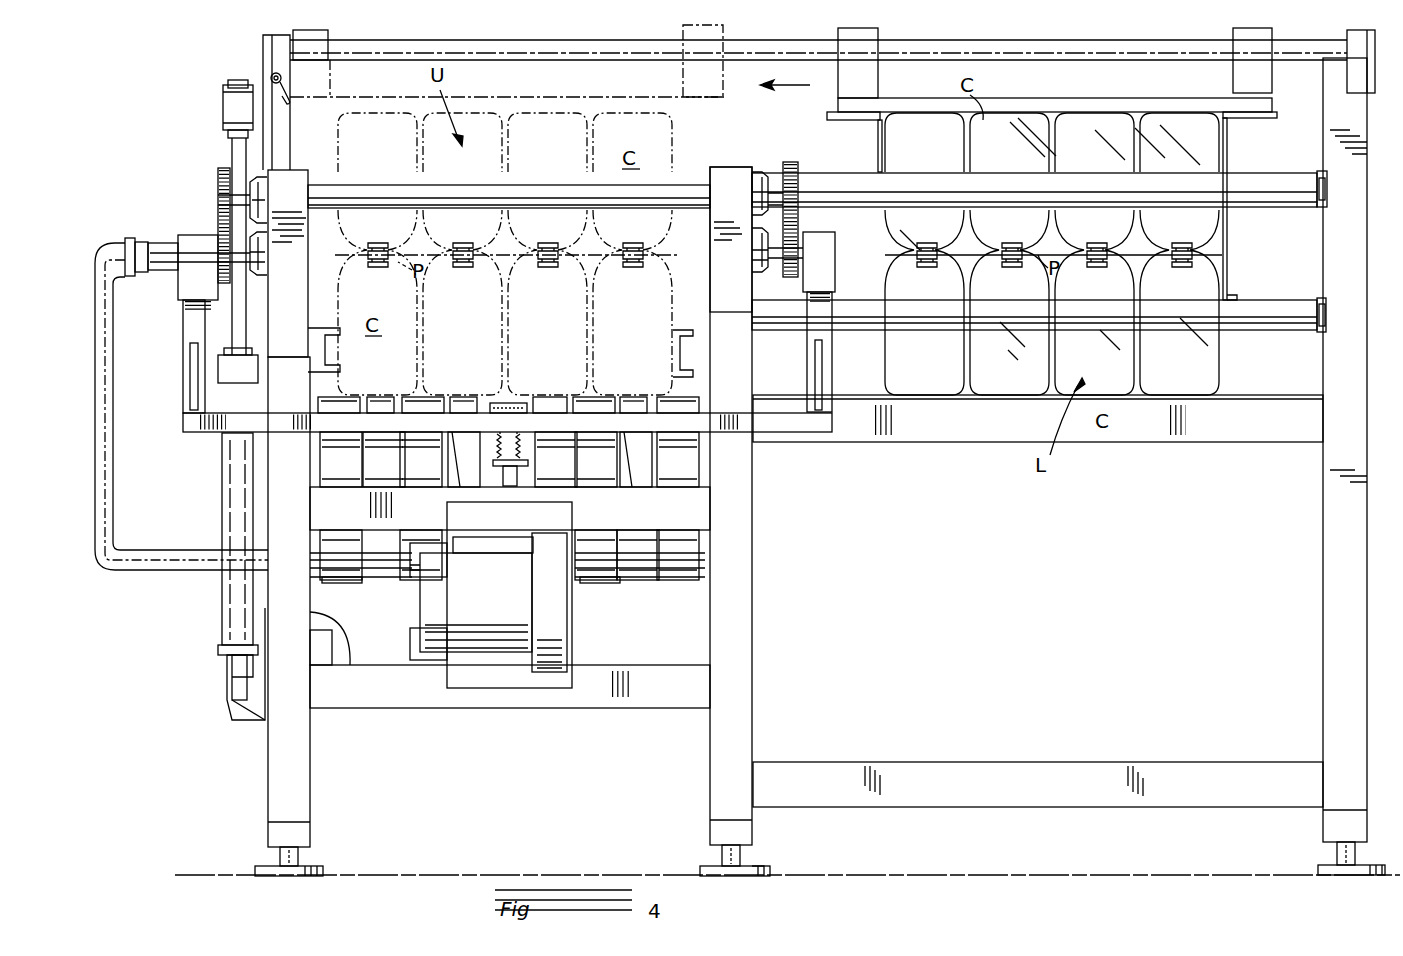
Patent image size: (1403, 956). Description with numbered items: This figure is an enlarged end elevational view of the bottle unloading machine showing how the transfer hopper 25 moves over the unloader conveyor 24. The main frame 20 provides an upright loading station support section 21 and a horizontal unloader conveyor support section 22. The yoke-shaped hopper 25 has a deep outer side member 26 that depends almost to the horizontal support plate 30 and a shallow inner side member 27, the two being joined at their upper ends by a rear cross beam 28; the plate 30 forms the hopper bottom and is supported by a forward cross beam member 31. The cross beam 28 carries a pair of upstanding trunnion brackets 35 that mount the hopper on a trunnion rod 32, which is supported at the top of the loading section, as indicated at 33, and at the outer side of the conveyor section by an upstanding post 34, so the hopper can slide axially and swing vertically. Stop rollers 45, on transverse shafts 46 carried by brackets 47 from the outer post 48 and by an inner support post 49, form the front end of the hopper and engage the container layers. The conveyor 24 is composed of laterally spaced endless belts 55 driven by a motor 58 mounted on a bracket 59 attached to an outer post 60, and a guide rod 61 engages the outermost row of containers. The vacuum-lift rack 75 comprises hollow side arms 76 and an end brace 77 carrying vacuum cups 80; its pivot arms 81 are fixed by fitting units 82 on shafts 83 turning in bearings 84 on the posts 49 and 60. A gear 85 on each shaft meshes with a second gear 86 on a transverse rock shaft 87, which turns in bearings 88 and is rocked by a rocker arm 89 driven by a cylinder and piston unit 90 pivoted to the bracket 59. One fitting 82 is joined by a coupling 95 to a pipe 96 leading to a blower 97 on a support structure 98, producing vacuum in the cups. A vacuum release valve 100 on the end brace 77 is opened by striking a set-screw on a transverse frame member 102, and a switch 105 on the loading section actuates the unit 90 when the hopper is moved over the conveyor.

The main frame 20 is at (760, 652).
The loading station support section 21 is at (1360, 172).
The unloader conveyor support section 22 is at (280, 463).
The unloader conveyor 24 is at (530, 410).
The hopper 25 is at (560, 120).
The outer side member 26 is at (1228, 160).
The inner side member 27 is at (878, 142).
The rear cross beam 28 is at (1008, 100).
The horizontal support plate 30 is at (1258, 395).
The forward cross beam member 31 is at (1196, 432).
The trunnion rod 32 is at (748, 52).
The trunnion rod support 33 is at (1362, 54).
The upstanding post 34 is at (262, 43).
The trunnion brackets 35 is at (320, 76).
The stop rollers 45 is at (1258, 193).
The transverse shafts 46 is at (1320, 172).
The brackets 47 is at (1325, 192).
The outer post 48 is at (1340, 695).
The inner support post 49 is at (724, 172).
The endless belts 55 is at (328, 583).
The motor 58 is at (340, 630).
The bracket 59 is at (265, 690).
The outer post 60 is at (300, 351).
The guide rod 61 is at (322, 330).
The vacuum-lift rack 75 is at (766, 424).
The side arms 76 is at (185, 420).
The end brace 77 is at (425, 412).
The vacuum cups 80 is at (490, 400).
The pivot arms 81 is at (190, 320).
The fitting units 82 is at (190, 245).
The shafts 83 is at (262, 252).
The bearings 84 is at (255, 262).
The gear 85 is at (215, 250).
The second gear 86 is at (222, 168).
The transverse rock shaft 87 is at (515, 188).
The bearings 88 is at (258, 185).
The rocker arm 89 is at (235, 98).
The cylinder and piston unit 90 is at (230, 595).
The coupling 95 is at (132, 240).
The pipe 96 is at (114, 448).
The blower 97 is at (492, 606).
The support structure 98 is at (566, 700).
The vacuum release valve 100 is at (498, 406).
The transverse frame member 102 is at (740, 515).
The switch 105 is at (270, 68).